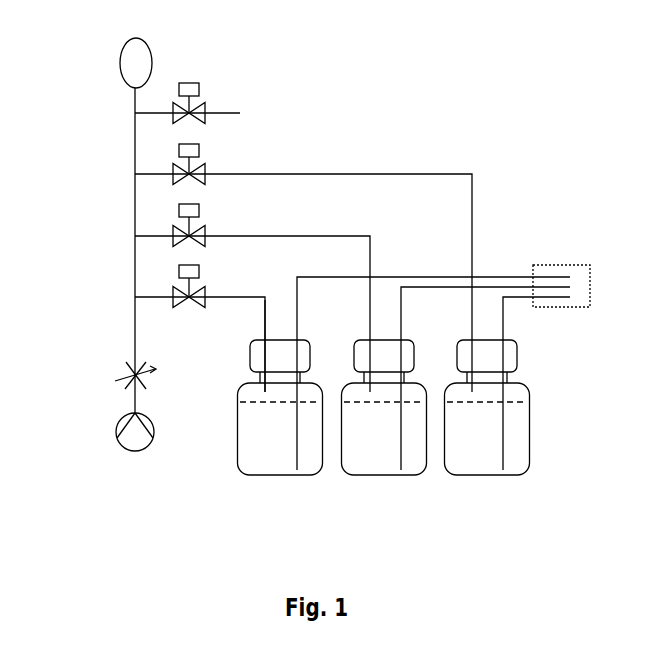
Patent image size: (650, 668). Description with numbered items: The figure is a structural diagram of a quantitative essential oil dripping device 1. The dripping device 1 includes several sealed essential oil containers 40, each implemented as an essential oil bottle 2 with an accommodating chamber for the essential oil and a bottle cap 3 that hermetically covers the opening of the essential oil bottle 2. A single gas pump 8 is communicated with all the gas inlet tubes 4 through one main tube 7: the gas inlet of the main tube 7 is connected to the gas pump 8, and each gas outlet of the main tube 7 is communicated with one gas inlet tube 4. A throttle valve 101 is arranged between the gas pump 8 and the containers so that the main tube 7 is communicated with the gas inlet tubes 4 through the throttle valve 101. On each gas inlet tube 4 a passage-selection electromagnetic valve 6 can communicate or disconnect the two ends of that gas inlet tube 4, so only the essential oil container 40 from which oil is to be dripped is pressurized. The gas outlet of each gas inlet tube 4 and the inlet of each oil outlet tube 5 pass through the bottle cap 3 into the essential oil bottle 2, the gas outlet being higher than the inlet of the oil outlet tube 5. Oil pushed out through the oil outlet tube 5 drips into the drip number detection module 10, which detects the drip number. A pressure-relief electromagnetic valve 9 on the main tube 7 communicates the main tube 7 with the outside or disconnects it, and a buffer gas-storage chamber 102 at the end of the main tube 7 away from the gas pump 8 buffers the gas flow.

The dripping device 1 is at (353, 132).
The essential oil bottle 2 is at (530, 412).
The bottle cap 3 is at (511, 361).
The gas inlet tube 4 is at (262, 352).
The oil outlet tube 5 is at (498, 275).
The passage-selection electromagnetic valve 6 is at (192, 172).
The main tube 7 is at (132, 195).
The gas pump 8 is at (114, 416).
The pressure-relief electromagnetic valve 9 is at (193, 110).
The drip number detection module 10 is at (560, 265).
The sealed essential oil container 40 is at (422, 427).
The throttle valve 101 is at (121, 373).
The buffer gas-storage chamber 102 is at (135, 72).